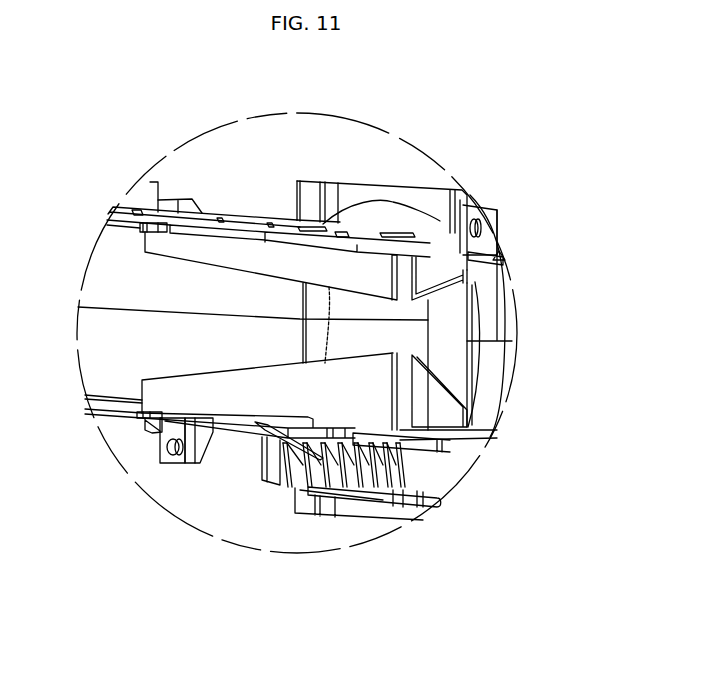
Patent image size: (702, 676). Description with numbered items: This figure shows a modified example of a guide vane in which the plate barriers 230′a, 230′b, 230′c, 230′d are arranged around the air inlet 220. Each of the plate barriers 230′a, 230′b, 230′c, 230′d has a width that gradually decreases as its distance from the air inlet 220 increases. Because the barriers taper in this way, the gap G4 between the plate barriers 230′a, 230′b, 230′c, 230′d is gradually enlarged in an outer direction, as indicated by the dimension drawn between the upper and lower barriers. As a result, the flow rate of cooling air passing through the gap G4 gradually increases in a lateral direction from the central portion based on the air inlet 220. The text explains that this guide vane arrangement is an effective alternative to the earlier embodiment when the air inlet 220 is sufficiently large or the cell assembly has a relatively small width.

The plate barrier 230′a is at (282, 258).
The air inlet 220 is at (430, 203).
The plate barrier 230′b is at (437, 271).
The plate barrier 230′c is at (288, 392).
The plate barrier 230′d is at (427, 410).
The gap G4 is at (270, 363).